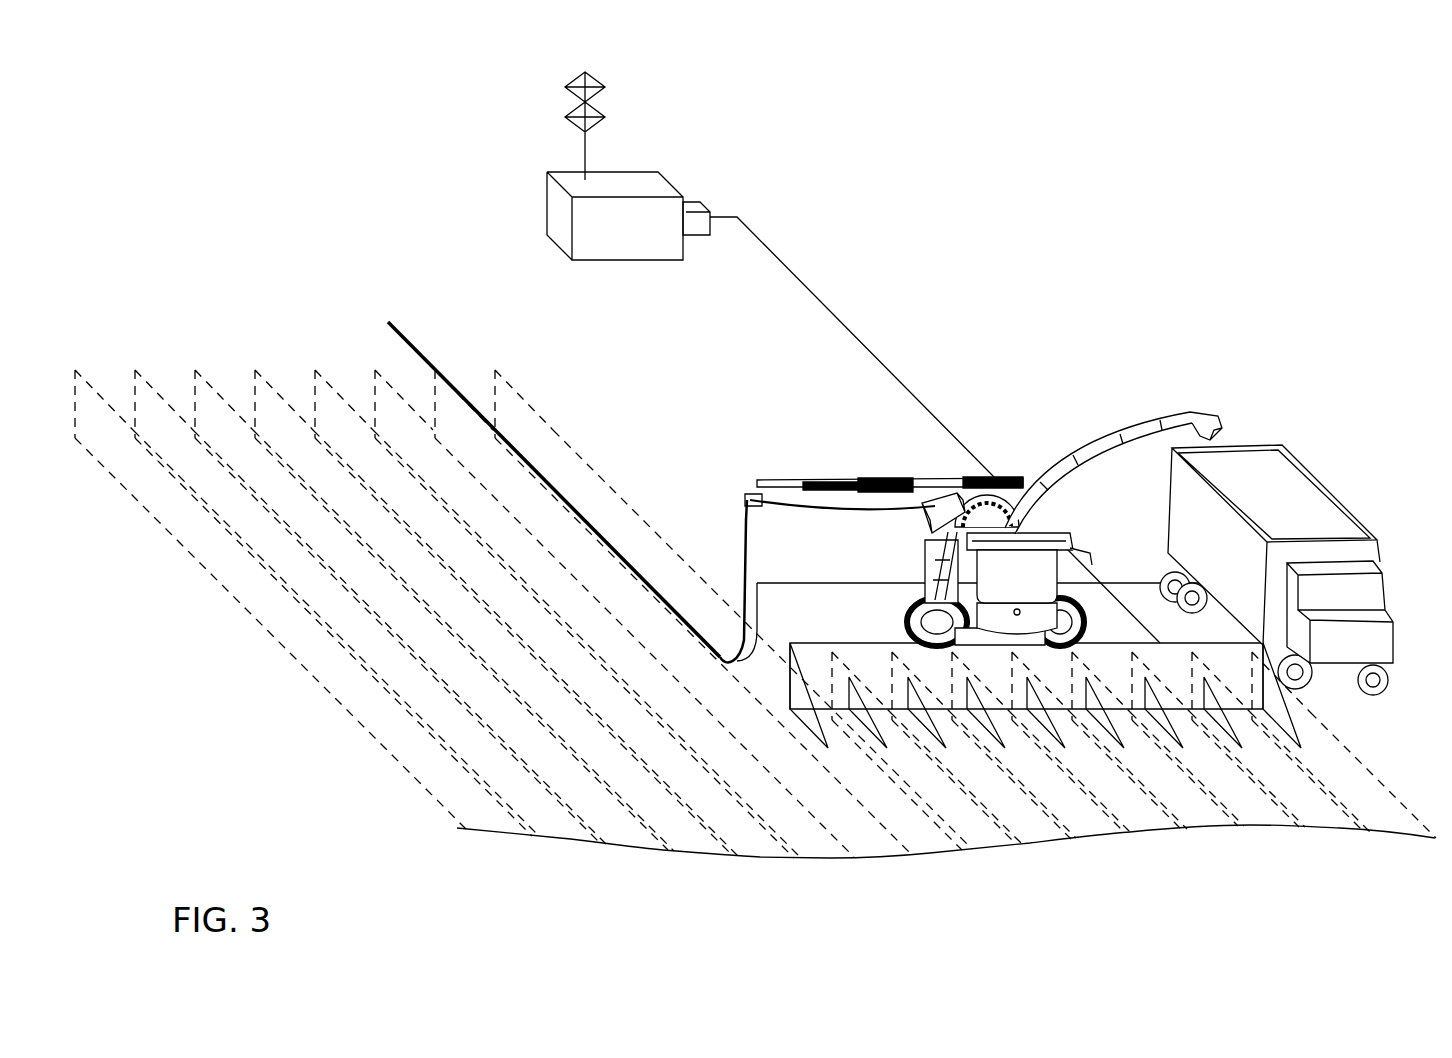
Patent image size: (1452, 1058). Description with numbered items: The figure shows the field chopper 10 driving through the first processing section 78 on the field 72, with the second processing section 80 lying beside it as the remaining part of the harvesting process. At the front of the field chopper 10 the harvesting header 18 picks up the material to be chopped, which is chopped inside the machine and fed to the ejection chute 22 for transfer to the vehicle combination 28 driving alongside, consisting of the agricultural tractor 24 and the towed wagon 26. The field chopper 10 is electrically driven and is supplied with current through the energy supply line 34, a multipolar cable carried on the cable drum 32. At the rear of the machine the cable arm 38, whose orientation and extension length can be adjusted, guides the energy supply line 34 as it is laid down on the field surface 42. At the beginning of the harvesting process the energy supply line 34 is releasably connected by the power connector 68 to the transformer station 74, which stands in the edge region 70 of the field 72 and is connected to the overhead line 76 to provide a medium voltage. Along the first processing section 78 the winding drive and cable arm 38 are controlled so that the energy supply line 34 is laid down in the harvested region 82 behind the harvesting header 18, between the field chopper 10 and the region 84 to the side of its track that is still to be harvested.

The field chopper 10 is at (971, 505).
The harvesting header 18 is at (875, 667).
The ejection chute 22 is at (1110, 438).
The agricultural tractor 24 is at (1357, 637).
The wagon 26 is at (1306, 507).
The vehicle combination 28 is at (1303, 534).
The cable drum 32 is at (913, 523).
The energy supply line 34 is at (428, 352).
The cable arm 38 is at (832, 483).
The field surface 42 is at (1396, 759).
The power connector 68 is at (690, 207).
The edge region 70 is at (199, 336).
The field 72 is at (1220, 838).
The transformer station 74 is at (647, 187).
The overhead line 76 is at (568, 106).
The first processing section 78 is at (1106, 814).
The second processing section 80 is at (506, 682).
The harvested region 82 is at (1113, 617).
The region still to be harvested 84 is at (680, 850).